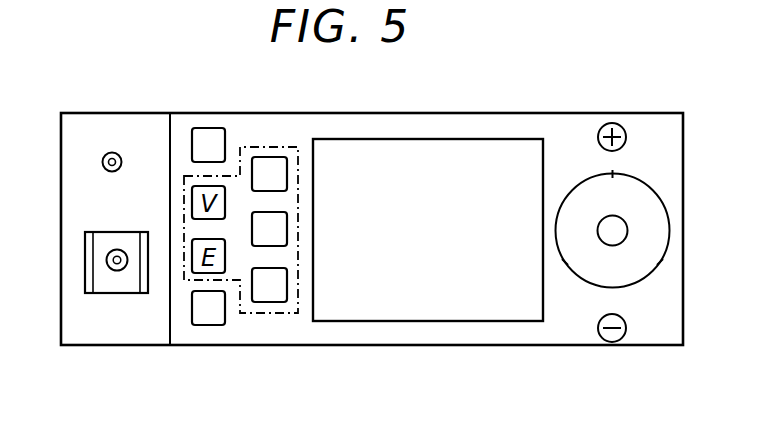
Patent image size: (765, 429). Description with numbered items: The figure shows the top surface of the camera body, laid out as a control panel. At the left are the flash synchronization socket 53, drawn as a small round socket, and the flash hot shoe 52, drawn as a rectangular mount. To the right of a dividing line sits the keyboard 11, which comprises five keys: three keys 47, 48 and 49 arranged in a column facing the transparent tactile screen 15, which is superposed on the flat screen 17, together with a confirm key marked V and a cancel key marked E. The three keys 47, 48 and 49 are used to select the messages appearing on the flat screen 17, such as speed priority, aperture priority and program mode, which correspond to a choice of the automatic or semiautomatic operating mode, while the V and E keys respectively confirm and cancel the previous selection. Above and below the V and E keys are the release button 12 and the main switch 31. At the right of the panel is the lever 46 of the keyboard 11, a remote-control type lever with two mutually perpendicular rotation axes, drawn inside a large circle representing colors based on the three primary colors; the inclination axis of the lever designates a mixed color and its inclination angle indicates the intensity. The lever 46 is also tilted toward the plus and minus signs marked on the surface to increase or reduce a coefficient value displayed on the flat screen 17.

The keyboard 11 is at (260, 316).
The release button 12 is at (208, 145).
The tactile screen 15 is at (370, 127).
The flat screen 17 is at (402, 127).
The main switch 31 is at (208, 308).
The lever 46 is at (614, 232).
The key 47 is at (269, 174).
The key 48 is at (269, 229).
The key 49 is at (269, 285).
The flash hot shoe 52 is at (117, 283).
The flash synchronization socket 53 is at (122, 160).